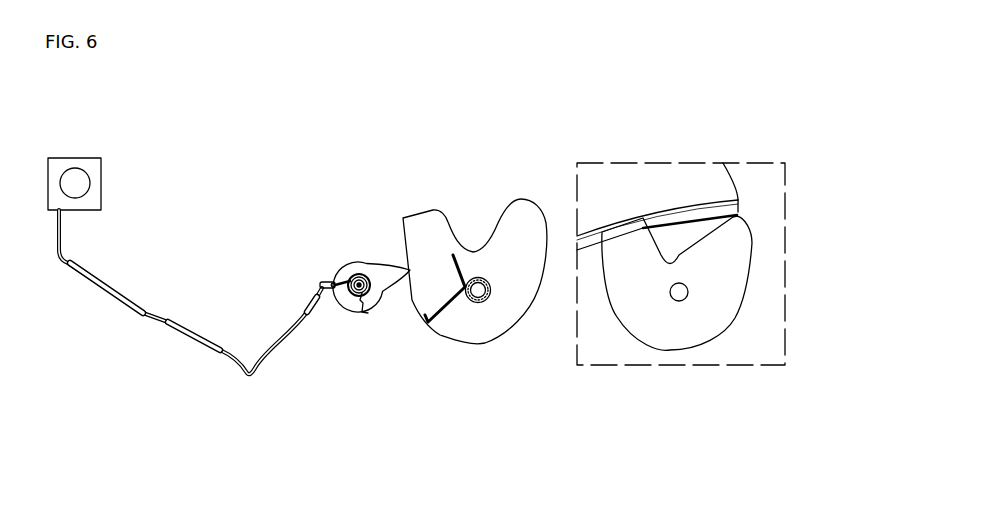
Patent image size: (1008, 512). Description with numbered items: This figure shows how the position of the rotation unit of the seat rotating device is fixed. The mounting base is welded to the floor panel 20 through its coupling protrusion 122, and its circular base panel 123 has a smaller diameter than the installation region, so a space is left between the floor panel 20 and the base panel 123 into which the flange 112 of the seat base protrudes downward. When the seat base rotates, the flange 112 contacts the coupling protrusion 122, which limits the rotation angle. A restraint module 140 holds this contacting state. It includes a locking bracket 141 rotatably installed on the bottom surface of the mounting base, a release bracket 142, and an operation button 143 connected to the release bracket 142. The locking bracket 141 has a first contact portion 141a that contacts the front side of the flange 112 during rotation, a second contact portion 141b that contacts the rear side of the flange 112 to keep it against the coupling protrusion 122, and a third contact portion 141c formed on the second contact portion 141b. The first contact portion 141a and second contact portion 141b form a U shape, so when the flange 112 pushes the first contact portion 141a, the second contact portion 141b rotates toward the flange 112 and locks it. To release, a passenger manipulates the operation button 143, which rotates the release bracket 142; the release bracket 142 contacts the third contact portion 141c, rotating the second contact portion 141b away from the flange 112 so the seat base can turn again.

The floor panel 20 is at (610, 178).
The flange 112 is at (675, 213).
The coupling protrusion 122 is at (760, 188).
The base panel 123 is at (770, 258).
The restraint module 140 is at (368, 383).
The locking bracket 141 is at (480, 352).
The first contact portion 141a is at (522, 210).
The second contact portion 141b is at (423, 222).
The third contact portion 141c is at (417, 297).
The release bracket 142 is at (345, 300).
The operation button 143 is at (87, 165).